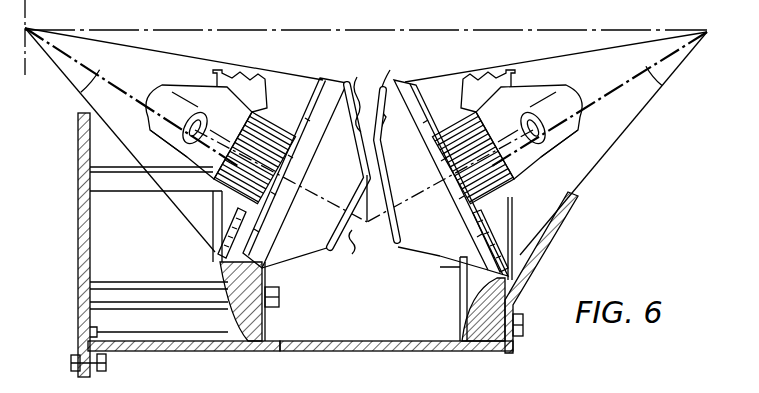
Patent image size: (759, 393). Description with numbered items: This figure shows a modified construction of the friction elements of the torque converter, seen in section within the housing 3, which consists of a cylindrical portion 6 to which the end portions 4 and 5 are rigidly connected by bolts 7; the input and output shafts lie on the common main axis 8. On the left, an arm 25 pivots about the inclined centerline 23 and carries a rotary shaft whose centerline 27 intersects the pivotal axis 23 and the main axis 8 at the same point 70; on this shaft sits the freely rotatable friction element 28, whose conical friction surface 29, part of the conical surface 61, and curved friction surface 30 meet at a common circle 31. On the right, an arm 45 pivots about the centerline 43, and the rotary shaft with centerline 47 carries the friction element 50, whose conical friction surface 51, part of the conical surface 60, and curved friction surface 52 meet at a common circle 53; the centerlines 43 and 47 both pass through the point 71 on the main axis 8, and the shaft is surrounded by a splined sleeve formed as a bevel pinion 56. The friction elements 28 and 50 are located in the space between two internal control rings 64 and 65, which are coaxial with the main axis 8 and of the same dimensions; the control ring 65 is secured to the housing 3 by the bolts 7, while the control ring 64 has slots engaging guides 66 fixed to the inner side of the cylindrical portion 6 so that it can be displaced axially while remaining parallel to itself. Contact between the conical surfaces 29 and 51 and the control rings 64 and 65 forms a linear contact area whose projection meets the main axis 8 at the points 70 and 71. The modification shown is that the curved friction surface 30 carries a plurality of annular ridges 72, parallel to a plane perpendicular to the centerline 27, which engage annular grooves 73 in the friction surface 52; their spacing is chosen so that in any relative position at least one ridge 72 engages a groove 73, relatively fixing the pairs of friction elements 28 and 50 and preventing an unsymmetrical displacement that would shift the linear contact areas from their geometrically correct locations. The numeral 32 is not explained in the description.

The housing 3 is at (173, 351).
The end portion 4 is at (78, 213).
The end portion 5 is at (560, 228).
The cylindrical portion 6 is at (322, 349).
The bolts 7 is at (71, 361).
The main axis 8 is at (308, 31).
The centerline of the bore 23 is at (145, 102).
The arm 25 is at (195, 87).
The centerline of the rotary shaft 27 is at (312, 197).
The friction element 28 is at (310, 262).
The friction surface 29 is at (332, 82).
The friction surface 30 is at (361, 251).
The common circle 31 is at (262, 224).
The first brush 32 is at (268, 122).
The centerline of the bore 43 is at (570, 135).
The arm 45 is at (544, 90).
The centerline of the rotary shaft 47 is at (402, 215).
The friction element 50 is at (423, 253).
The friction surface 51 is at (403, 82).
The friction surface 52 is at (458, 260).
The common circle 53 is at (493, 230).
The bevel pinion 56 is at (456, 130).
The conical surface 60 is at (645, 62).
The conical surface 61 is at (143, 50).
The control ring 64 is at (230, 353).
The control ring 65 is at (485, 350).
The guides 66 is at (88, 335).
The point 70 is at (27, 27).
The point 71 is at (707, 32).
The ridges 72 is at (352, 93).
The grooves 73 is at (393, 89).